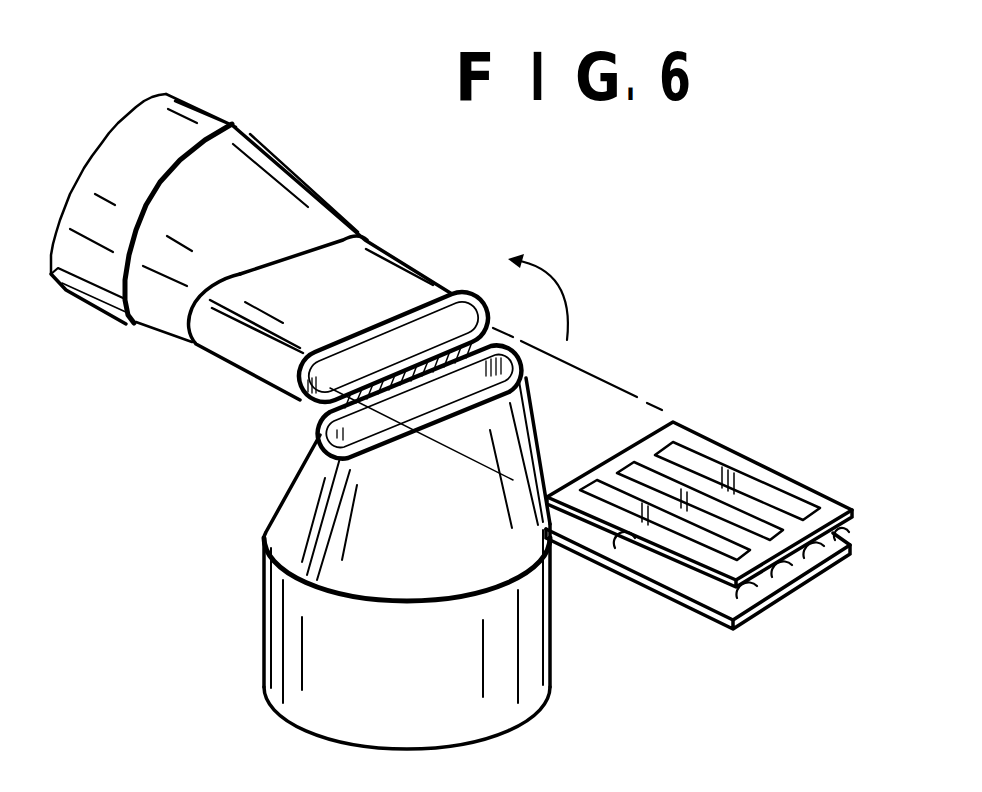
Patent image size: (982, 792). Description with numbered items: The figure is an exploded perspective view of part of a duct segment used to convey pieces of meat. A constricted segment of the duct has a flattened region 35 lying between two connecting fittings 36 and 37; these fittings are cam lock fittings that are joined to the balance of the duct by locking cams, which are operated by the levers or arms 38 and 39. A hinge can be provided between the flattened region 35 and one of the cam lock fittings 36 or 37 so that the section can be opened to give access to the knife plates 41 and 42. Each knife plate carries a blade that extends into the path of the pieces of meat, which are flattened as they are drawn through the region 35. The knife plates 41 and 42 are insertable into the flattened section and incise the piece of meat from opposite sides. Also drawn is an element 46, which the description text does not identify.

The flattened region 35 is at (413, 262).
The connecting fitting 36 is at (231, 124).
The connecting fitting 37 is at (296, 738).
The lever or arm 38 is at (58, 280).
The lever or arm 39 is at (327, 590).
The knife plate 41 is at (748, 453).
The knife plate 42 is at (658, 592).
The gasket ring 46 is at (316, 414).